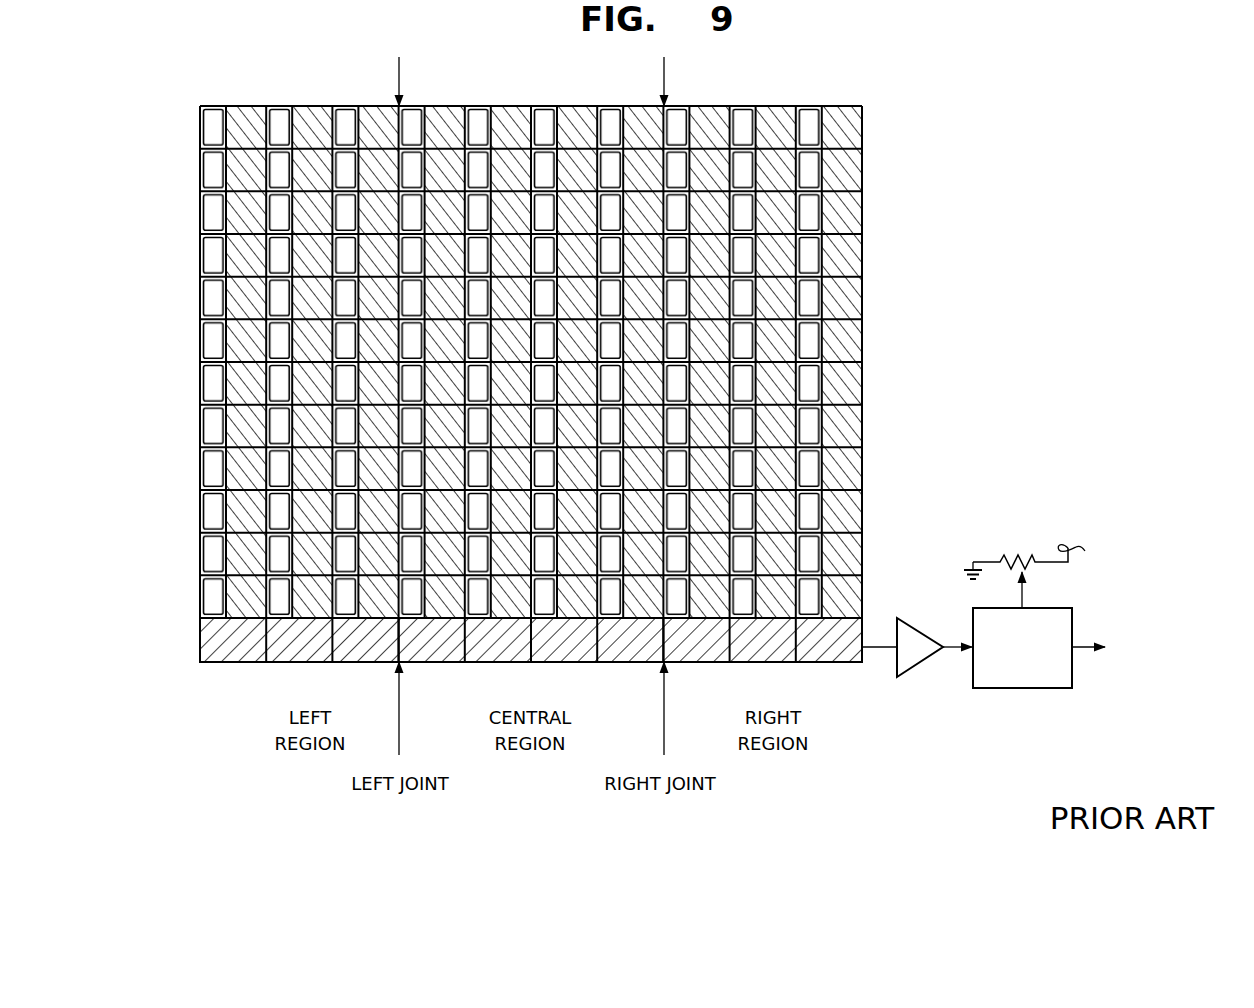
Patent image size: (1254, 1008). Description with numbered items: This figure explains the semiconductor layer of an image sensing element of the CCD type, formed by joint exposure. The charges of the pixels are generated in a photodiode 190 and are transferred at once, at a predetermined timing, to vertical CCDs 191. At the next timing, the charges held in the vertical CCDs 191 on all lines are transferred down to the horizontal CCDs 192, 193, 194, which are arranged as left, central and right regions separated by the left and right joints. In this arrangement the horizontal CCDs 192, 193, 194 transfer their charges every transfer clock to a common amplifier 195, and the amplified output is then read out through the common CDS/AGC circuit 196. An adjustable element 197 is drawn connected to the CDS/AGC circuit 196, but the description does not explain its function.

The photodiode 190 is at (279, 112).
The vertical CCDs 191 is at (849, 106).
The horizontal CCD 192 is at (368, 662).
The horizontal CCD 193 is at (565, 662).
The horizontal CCD 194 is at (705, 662).
The common amplifier 195 is at (912, 625).
The CDS/AGC circuit 196 is at (1037, 690).
The variable resistor 197 is at (1013, 553).